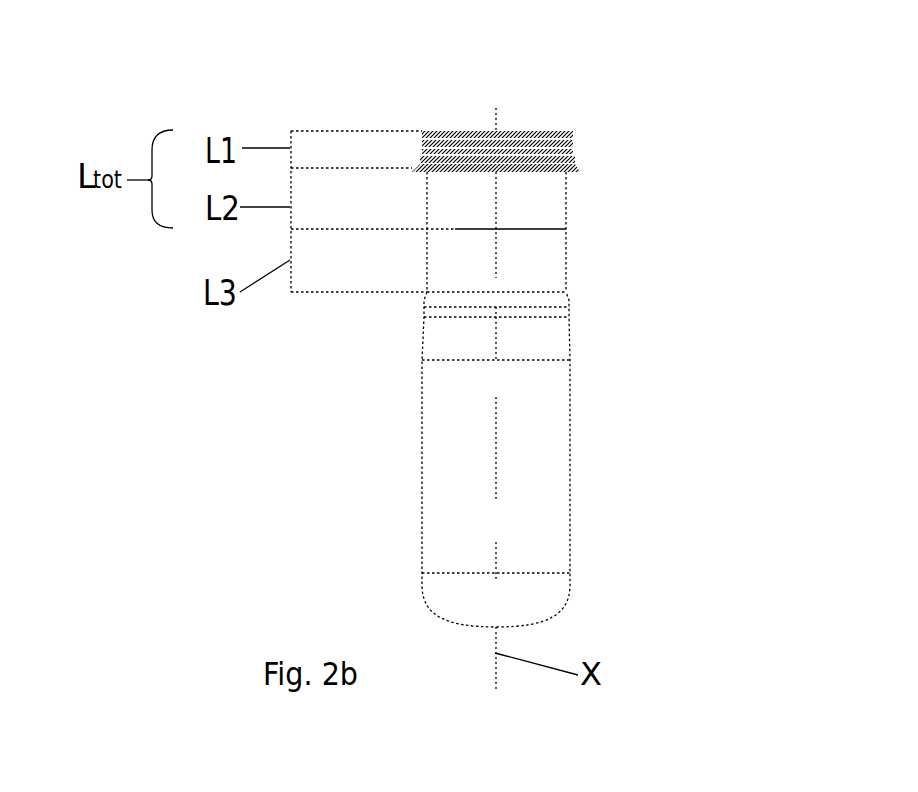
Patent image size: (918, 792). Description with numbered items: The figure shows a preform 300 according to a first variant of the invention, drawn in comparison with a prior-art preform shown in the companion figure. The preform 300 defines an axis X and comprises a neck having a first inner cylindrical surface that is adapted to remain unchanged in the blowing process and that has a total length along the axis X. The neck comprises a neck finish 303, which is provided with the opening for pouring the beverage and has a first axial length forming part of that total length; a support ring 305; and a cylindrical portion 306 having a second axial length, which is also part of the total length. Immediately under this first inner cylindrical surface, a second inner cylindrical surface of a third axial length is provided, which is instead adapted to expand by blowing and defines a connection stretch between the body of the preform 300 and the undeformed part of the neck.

The preform 300 is at (347, 503).
The neck finish 303 is at (572, 138).
The support ring 305 is at (577, 168).
The cylindrical portion 306 is at (543, 193).